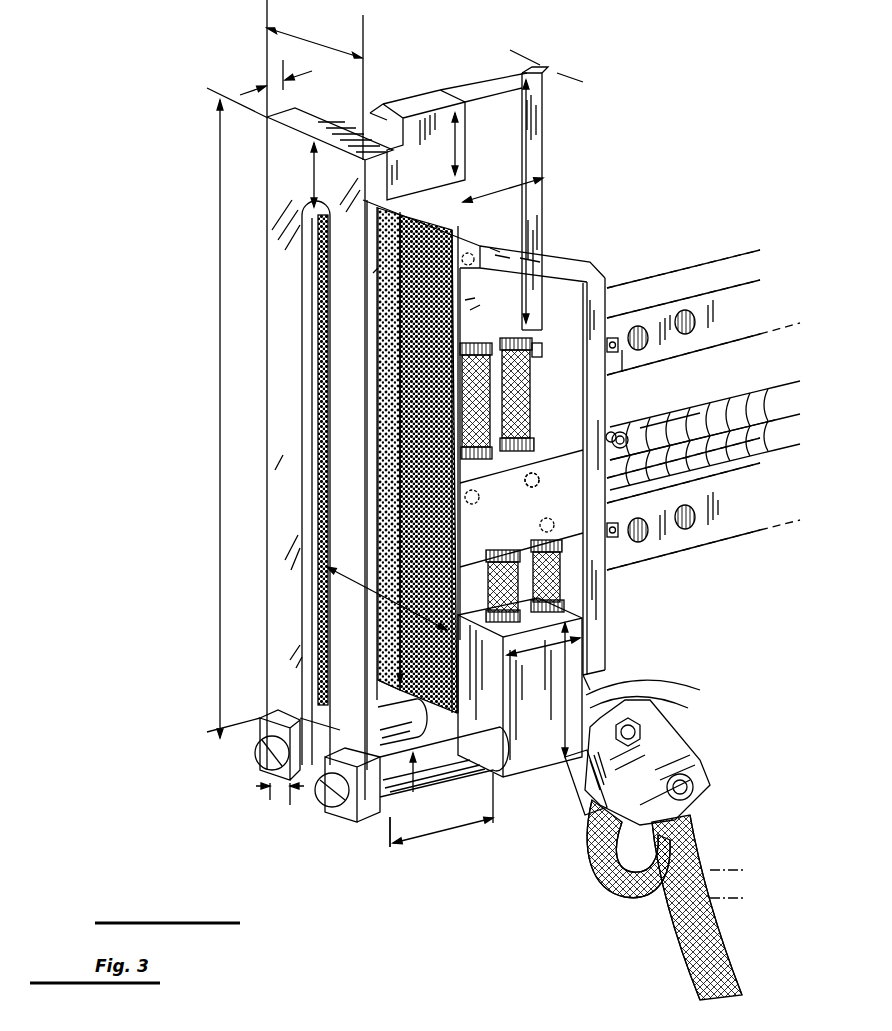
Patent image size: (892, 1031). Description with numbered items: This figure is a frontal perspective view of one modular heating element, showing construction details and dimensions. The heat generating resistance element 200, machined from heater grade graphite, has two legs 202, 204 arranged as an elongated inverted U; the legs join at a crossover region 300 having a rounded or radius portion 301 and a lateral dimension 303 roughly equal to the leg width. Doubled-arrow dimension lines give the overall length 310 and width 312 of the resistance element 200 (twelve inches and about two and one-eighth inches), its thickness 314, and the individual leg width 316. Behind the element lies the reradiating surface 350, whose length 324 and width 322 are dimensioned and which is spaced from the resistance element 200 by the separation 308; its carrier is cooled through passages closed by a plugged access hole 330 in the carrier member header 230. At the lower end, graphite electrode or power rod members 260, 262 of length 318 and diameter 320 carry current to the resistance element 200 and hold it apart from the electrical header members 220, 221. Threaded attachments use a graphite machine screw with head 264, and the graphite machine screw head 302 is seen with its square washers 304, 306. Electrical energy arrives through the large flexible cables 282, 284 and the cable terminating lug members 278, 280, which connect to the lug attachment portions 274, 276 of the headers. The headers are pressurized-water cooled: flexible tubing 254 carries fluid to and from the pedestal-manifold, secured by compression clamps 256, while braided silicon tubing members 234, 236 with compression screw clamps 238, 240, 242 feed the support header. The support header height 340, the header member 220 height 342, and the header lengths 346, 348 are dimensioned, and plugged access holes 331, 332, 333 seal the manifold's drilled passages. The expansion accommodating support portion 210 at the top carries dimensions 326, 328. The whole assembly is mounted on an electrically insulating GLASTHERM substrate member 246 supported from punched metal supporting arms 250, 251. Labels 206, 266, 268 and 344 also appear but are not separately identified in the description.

The resistance element 200 is at (287, 207).
The leg 202 is at (362, 489).
The leg 204 is at (304, 396).
The top face of frame block 206 is at (348, 112).
The expansion accommodating support portion 210 is at (413, 90).
The electrical header member 220 is at (550, 756).
The electrical header member 221 is at (397, 697).
The carrier member header 230 is at (540, 253).
The flexible tubing member 234 is at (520, 393).
The flexible tubing member 236 is at (612, 433).
The compression screw clamp 238 is at (690, 255).
The compression screw clamp 240 is at (540, 342).
The compression screw clamp 242 is at (712, 403).
The electrically insulating substrate member 246 is at (578, 420).
The punched metal supporting arm 250 is at (700, 290).
The punched metal supporting arm 251 is at (717, 547).
The flexible tubing member 254 is at (740, 458).
The compression clamp 256 is at (628, 440).
The electrode or power rod member 260 is at (444, 762).
The electrode or power rod member 262 is at (403, 721).
The screw head 264 is at (325, 808).
The clamp block 266 is at (360, 823).
The extension line 268 is at (390, 820).
The lug attachment portion 274 is at (640, 687).
The lug attachment portion 276 is at (660, 705).
The cable terminating lug member 278 is at (568, 773).
The cable terminating lug member 280 is at (710, 777).
The flexible electrical cable 282 is at (627, 880).
The flexible electrical cable 284 is at (683, 937).
The crossover region 300 is at (220, 234).
The rounded or radius portion 301 is at (307, 214).
The graphite machine screw head 302 is at (253, 750).
The lateral dimension 303 is at (313, 182).
The square washer 304 is at (216, 739).
The square washer 306 is at (335, 722).
The separation 308 is at (373, 273).
The overall length 310 is at (218, 397).
The width 312 is at (322, 43).
The thickness dimension 314 is at (265, 73).
The leg width dimension 316 is at (282, 793).
The overall length 318 is at (454, 810).
The diameter 320 is at (420, 775).
The width dimension 322 is at (405, 608).
The overall length dimension 324 is at (399, 530).
The support portion dimension 326 is at (470, 165).
The support portion dimension 328 is at (380, 128).
The plugged access hole 330 is at (500, 228).
The plugged access hole 331 is at (552, 531).
The plugged access hole 332 is at (480, 497).
The plugged access hole 333 is at (538, 486).
The overall height dimension 340 is at (560, 643).
The overall height dimension 342 is at (543, 182).
The post top 344 is at (560, 73).
The length dimension 346 is at (535, 98).
The length dimension 348 is at (600, 688).
The reradiating surface 350 is at (442, 401).